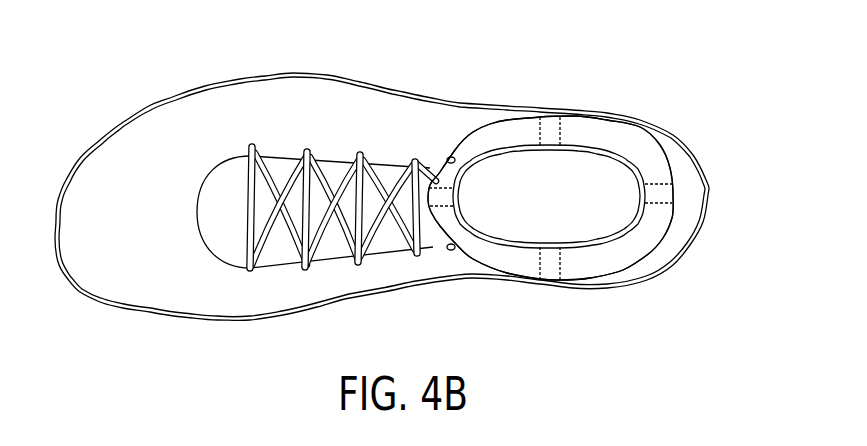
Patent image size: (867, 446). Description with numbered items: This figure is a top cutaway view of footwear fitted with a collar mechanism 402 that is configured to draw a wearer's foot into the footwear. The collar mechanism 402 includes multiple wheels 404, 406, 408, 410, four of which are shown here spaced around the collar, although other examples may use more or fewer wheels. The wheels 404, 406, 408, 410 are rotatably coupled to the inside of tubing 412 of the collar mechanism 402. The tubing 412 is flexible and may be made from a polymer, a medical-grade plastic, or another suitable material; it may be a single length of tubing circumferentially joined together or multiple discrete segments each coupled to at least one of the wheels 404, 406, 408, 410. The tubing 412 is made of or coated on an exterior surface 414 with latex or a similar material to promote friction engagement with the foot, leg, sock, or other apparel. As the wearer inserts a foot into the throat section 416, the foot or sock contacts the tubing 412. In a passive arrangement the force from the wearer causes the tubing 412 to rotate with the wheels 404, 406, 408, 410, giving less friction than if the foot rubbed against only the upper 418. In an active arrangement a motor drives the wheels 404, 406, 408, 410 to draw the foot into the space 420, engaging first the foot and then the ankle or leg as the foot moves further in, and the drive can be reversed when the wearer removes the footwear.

The collar mechanism 402 is at (632, 121).
The wheel 404 is at (435, 192).
The wheel 406 is at (547, 128).
The wheel 408 is at (667, 197).
The wheel 410 is at (548, 268).
The tubing 412 is at (625, 255).
The exterior surface 414 is at (672, 167).
The throat section 416 is at (548, 183).
The upper 418 is at (400, 133).
The space 420 is at (348, 270).